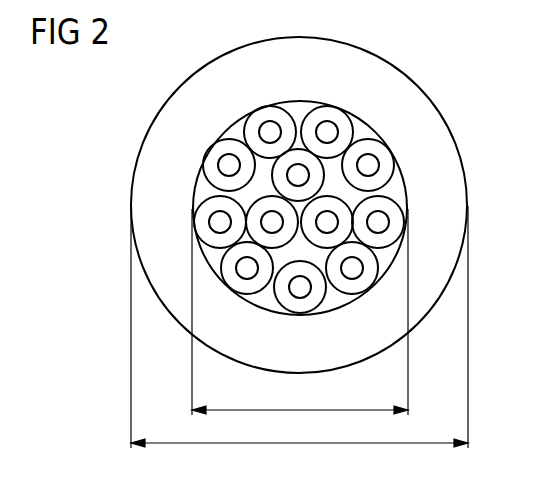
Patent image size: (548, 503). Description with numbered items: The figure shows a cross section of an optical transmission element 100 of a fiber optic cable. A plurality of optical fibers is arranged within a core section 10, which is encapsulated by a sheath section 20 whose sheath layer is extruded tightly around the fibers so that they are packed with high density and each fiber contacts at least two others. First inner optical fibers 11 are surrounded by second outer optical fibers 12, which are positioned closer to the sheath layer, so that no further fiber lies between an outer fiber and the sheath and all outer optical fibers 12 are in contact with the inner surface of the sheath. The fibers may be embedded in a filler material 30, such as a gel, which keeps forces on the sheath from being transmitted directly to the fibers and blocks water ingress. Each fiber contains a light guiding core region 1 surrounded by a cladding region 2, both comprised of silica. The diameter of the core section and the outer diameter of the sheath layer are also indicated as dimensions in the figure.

The optical transmission element 100 is at (122, 104).
The sheath section 20 is at (440, 158).
The core section 10 is at (397, 190).
The filler material 30 is at (200, 192).
The inner optical fibers 11 is at (300, 158).
The outer optical fibers 12 is at (363, 298).
The light guiding core region 1 is at (346, 272).
The cladding region 2 is at (353, 285).